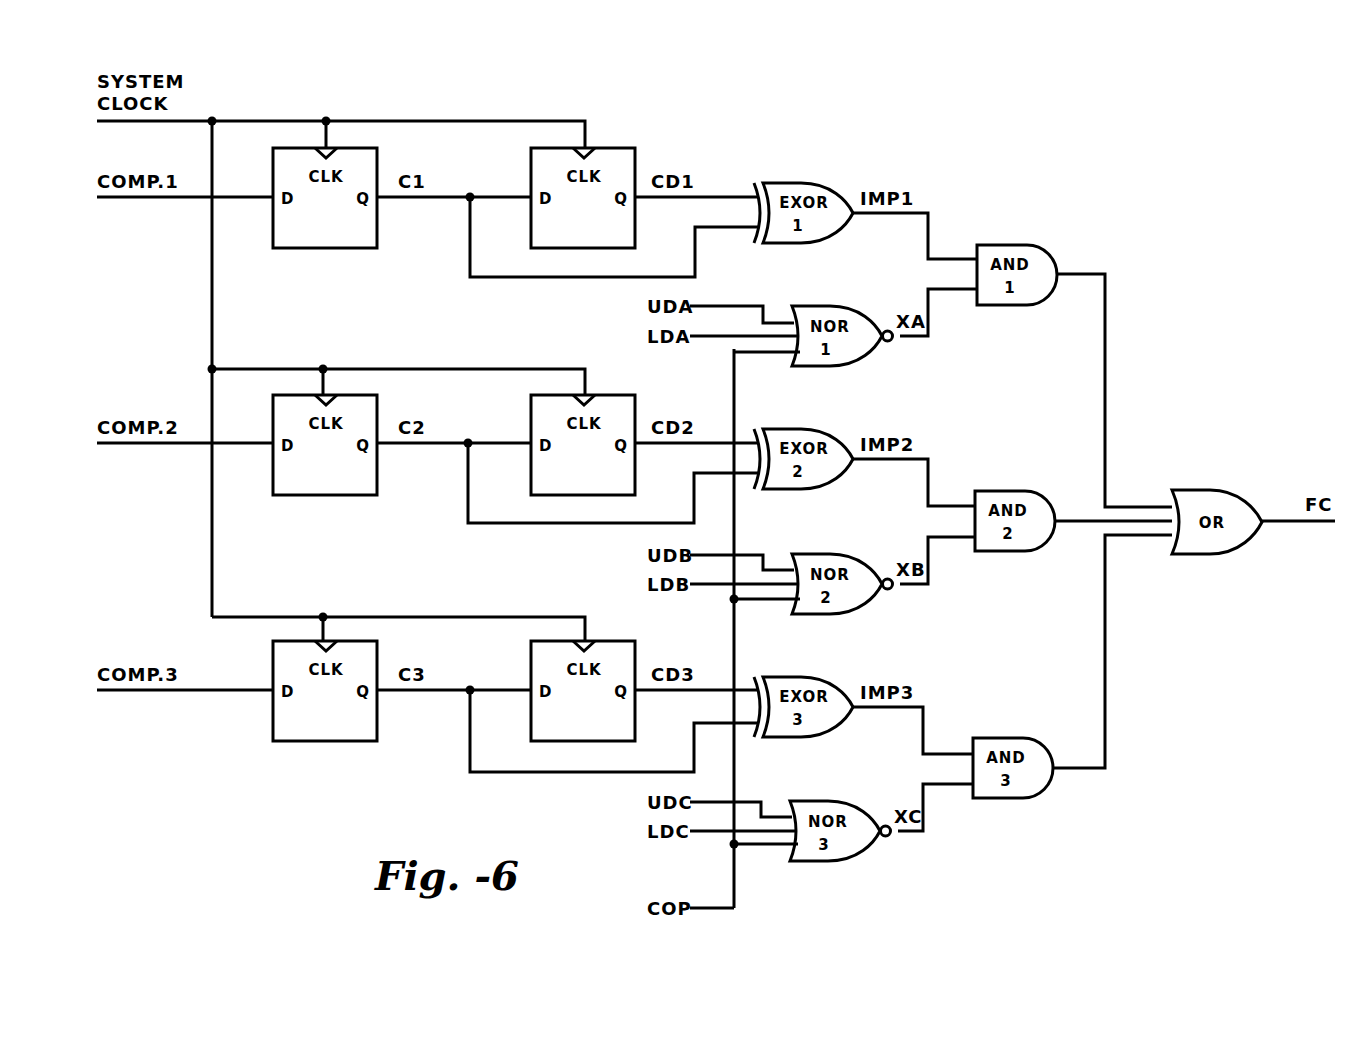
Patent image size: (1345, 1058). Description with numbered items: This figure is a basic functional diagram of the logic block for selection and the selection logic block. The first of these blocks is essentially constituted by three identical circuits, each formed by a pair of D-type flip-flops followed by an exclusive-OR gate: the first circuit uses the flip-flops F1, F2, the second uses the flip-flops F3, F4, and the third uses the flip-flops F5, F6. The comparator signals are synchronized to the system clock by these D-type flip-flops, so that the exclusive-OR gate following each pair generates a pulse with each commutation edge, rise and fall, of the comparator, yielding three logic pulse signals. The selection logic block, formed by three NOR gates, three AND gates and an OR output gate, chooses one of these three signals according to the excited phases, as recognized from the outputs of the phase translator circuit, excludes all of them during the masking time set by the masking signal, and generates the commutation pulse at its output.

The flip-flop of D type F1 is at (325, 198).
The flip-flop of D type F2 is at (583, 198).
The flip-flop of D type F3 is at (325, 445).
The flip-flop of D type F4 is at (583, 445).
The flip-flop of D type F5 is at (325, 691).
The flip-flop of D type F6 is at (583, 691).